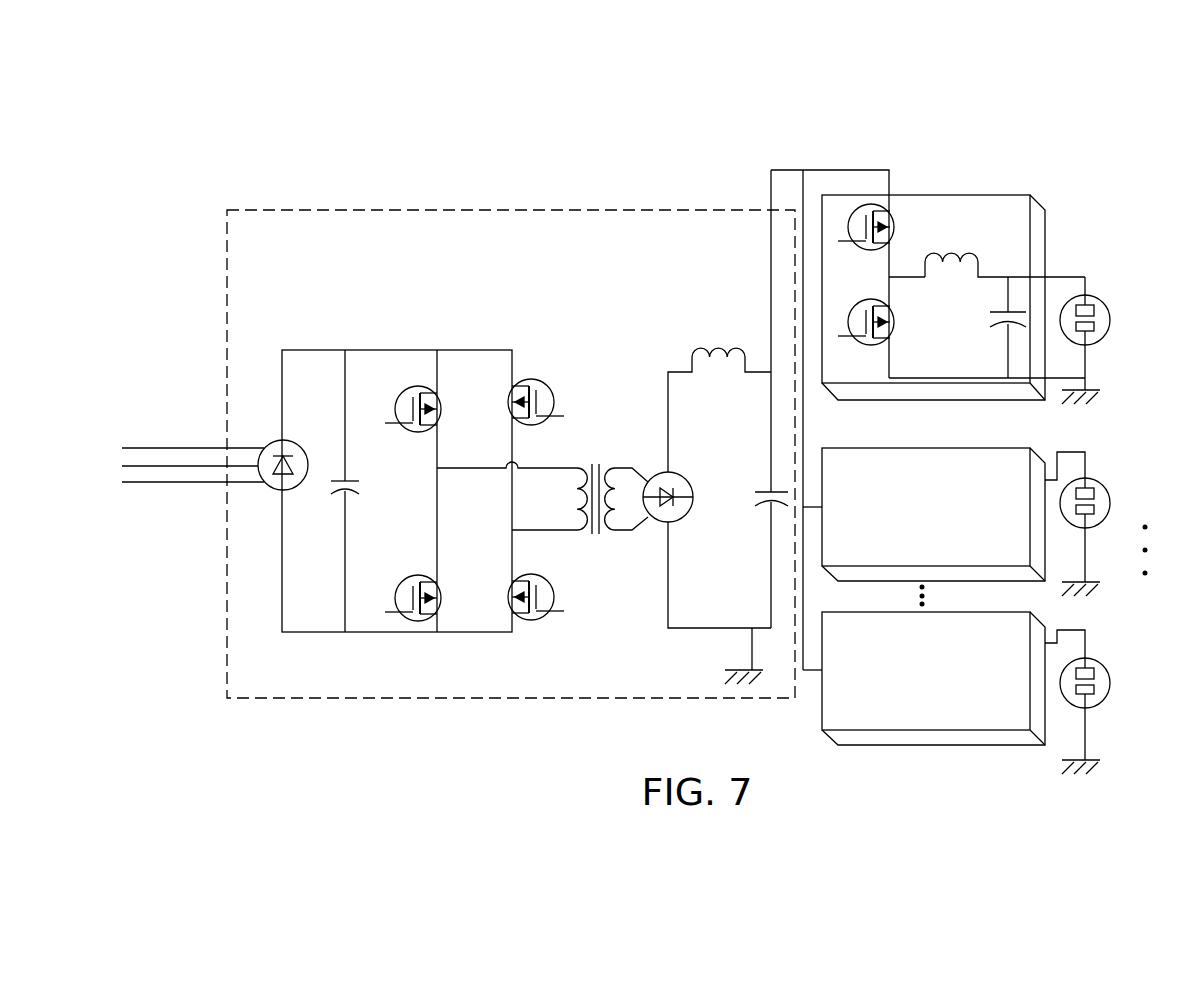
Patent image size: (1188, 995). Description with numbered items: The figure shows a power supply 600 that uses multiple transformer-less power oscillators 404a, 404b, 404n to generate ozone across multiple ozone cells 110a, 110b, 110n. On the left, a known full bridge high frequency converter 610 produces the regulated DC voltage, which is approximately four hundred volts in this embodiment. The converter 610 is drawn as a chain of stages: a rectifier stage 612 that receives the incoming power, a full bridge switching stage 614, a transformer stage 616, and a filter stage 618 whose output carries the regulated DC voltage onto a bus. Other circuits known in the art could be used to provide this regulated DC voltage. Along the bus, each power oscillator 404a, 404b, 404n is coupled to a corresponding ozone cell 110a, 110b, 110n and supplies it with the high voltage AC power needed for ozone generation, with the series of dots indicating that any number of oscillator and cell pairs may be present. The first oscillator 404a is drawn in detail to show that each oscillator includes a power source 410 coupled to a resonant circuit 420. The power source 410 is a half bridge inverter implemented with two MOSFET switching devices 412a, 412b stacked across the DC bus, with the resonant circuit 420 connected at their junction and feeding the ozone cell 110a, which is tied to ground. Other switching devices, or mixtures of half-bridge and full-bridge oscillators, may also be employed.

The power supply 600 is at (839, 88).
The full bridge high frequency converter 610 is at (502, 210).
The rectifier stage 612 is at (370, 640).
The full bridge switching stage 614 is at (558, 640).
The transformer stage 616 is at (638, 458).
The filter stage 618 is at (700, 316).
The power source 410 is at (907, 197).
The resonant circuit 420 is at (1025, 223).
The MOSFET switching device 412a is at (862, 251).
The MOSFET switching device 412b is at (895, 313).
The power oscillator 404a is at (828, 381).
The power oscillator 404b is at (835, 557).
The power oscillator 404n is at (834, 722).
The ozone cell 110a is at (1104, 308).
The ozone cell 110b is at (1110, 500).
The ozone cell 110n is at (1107, 673).